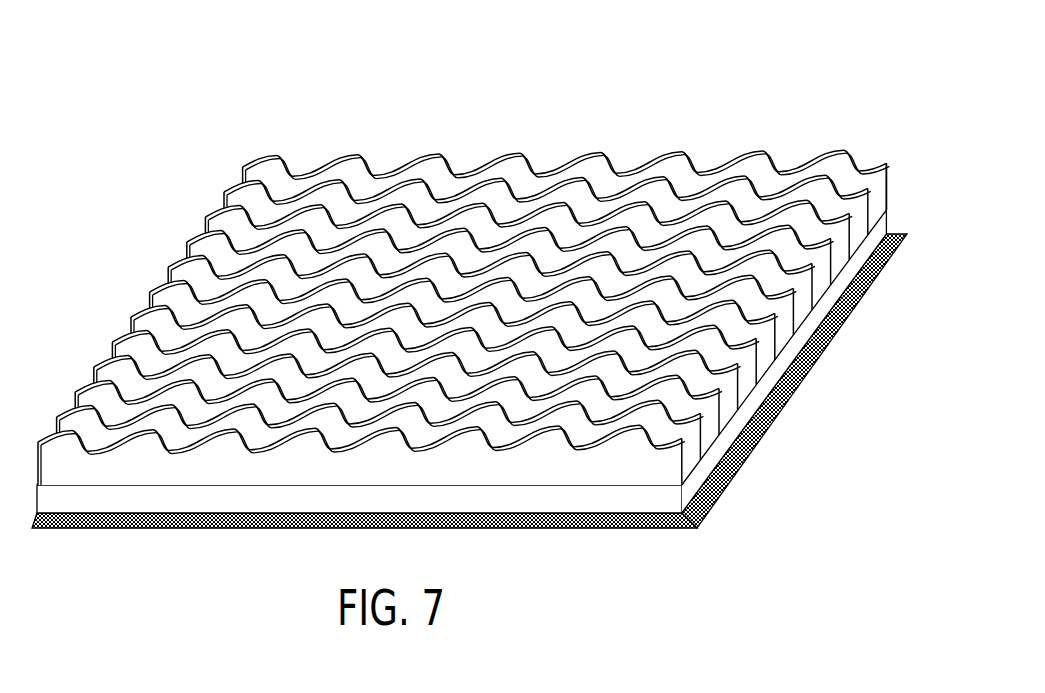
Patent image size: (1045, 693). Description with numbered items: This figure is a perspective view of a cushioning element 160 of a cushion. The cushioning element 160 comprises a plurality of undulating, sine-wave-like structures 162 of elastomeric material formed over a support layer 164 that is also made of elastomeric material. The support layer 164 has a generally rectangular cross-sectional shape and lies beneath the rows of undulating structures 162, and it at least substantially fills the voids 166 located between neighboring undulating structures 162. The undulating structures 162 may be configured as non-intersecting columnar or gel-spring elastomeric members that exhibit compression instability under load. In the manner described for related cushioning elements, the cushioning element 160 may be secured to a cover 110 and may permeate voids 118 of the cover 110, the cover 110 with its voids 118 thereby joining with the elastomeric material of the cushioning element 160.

The cushioning element 160 is at (339, 93).
The undulating structures 162 is at (500, 168).
The support layer 164 is at (720, 450).
The voids 166 is at (878, 202).
The cover 110 is at (857, 307).
The voids 118 is at (800, 387).